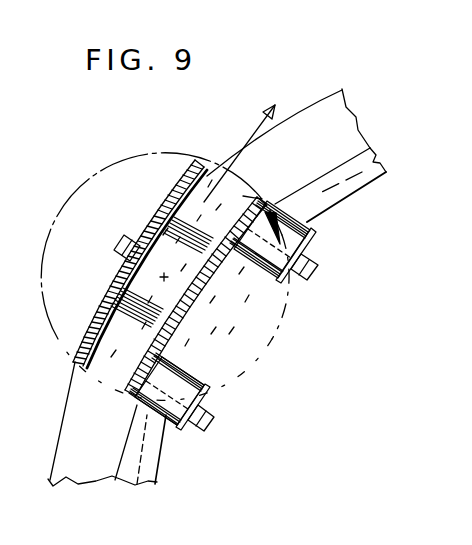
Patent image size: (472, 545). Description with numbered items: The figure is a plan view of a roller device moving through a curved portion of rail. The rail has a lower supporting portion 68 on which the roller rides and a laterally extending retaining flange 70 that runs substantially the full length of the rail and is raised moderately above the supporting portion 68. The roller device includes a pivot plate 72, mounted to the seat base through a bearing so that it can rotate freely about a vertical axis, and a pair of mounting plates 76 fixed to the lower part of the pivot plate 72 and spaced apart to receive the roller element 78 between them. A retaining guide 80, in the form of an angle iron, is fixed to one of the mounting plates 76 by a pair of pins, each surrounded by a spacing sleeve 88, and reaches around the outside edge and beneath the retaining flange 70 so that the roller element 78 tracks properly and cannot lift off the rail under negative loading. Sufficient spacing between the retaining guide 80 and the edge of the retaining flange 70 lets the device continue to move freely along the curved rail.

The lower supporting portion 68 is at (320, 116).
The retaining flange 70 is at (310, 212).
The pivot plate 72 is at (115, 158).
The mounting plates 76 is at (170, 197).
The roller element 78 is at (130, 284).
The retaining guide 80 is at (250, 340).
The spacing sleeve 88 is at (305, 216).